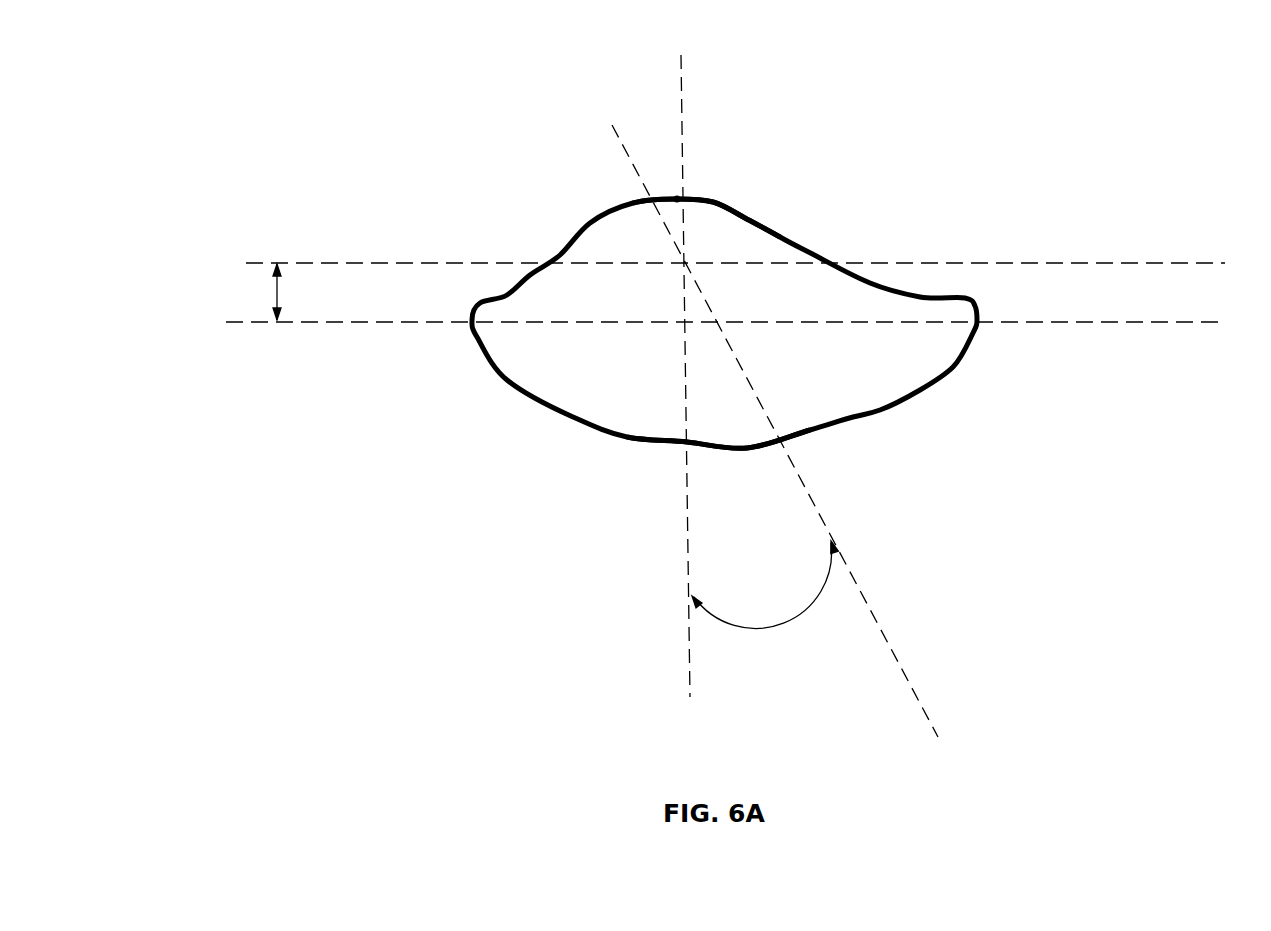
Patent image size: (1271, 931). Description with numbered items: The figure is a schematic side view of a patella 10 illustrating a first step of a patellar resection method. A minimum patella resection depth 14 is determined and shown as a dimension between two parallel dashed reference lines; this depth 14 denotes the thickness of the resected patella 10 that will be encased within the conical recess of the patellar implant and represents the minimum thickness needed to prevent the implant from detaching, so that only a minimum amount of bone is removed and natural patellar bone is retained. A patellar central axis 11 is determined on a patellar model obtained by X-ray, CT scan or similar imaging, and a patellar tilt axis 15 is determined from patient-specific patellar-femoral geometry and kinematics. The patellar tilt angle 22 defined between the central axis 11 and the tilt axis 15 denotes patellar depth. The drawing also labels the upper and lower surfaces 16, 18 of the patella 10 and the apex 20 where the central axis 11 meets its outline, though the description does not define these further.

The patella 10 is at (490, 482).
The patellar central axis 11 is at (688, 545).
The minimum patella resection depth 14 is at (272, 294).
The patellar tilt axis 15 is at (874, 620).
The upper surface 16 is at (730, 207).
The lower surface 18 is at (858, 423).
The apex 20 is at (667, 197).
The patellar tilt angle 22 is at (795, 622).